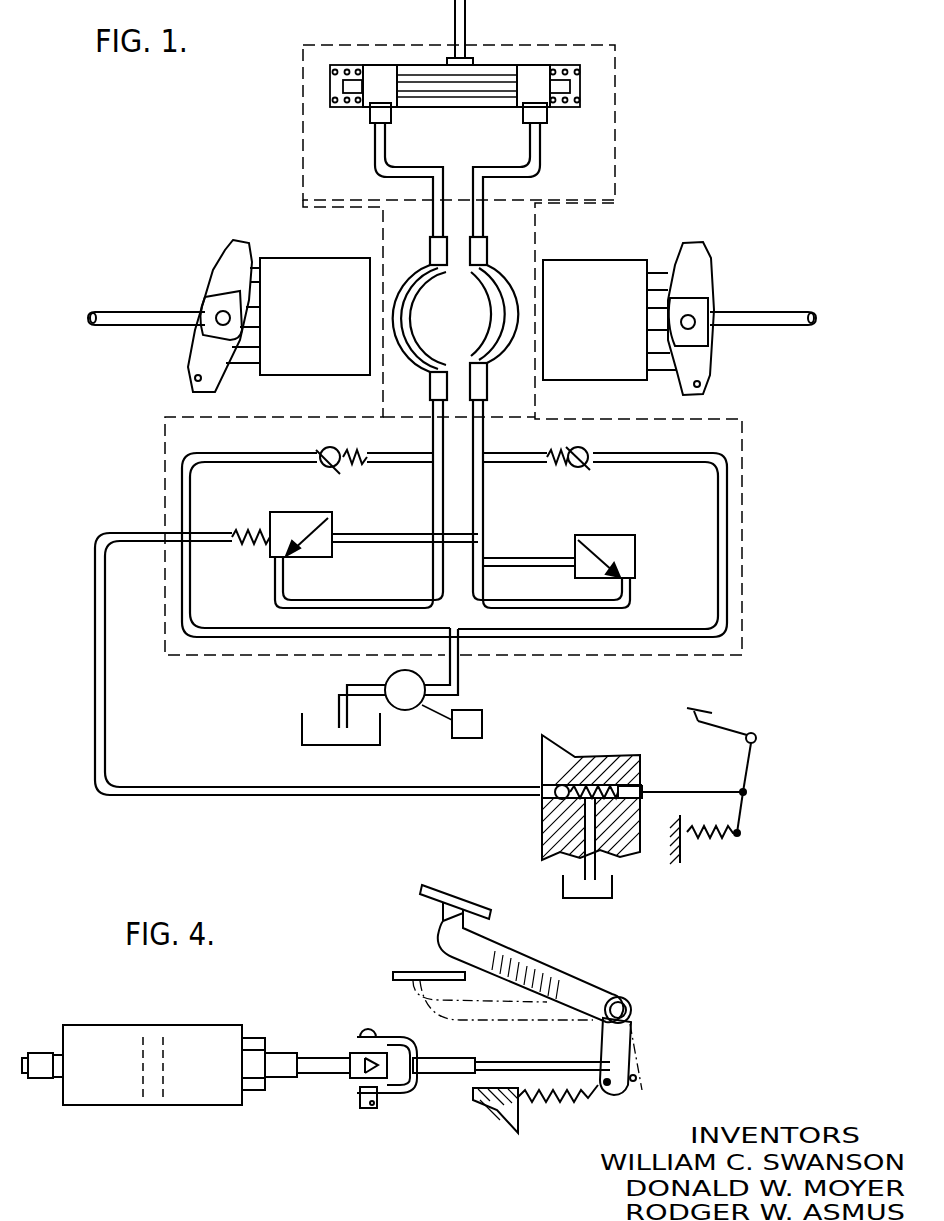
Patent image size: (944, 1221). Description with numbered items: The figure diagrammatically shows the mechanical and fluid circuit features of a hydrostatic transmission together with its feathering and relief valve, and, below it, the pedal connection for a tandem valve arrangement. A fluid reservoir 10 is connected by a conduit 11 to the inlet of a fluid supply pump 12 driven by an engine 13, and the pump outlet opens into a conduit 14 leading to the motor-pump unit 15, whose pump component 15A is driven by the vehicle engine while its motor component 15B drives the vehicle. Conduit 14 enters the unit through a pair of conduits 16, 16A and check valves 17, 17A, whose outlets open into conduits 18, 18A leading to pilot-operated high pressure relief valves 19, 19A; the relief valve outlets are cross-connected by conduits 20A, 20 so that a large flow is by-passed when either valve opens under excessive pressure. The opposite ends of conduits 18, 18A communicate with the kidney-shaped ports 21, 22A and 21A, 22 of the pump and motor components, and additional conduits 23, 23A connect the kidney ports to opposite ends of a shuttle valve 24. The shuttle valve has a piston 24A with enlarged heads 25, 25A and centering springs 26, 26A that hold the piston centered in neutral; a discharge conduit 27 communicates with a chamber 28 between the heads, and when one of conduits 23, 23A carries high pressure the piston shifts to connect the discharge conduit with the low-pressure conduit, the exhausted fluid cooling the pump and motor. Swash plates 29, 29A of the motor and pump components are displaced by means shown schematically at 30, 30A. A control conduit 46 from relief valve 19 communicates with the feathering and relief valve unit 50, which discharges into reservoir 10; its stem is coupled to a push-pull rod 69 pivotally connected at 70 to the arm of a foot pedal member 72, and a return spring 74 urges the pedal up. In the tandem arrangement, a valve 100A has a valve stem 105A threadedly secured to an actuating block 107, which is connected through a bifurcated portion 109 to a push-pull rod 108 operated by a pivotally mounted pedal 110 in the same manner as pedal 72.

In FIG. 1, the fluid reservoir 10 is at (302, 720).
In FIG. 1, the conduit 11 is at (337, 710).
In FIG. 1, the fluid supply pump 12 is at (387, 677).
In FIG. 1, the engine 13 is at (482, 723).
In FIG. 1, the conduit 14 is at (460, 670).
In FIG. 1, the motor-pump unit 15 is at (580, 256).
In FIG. 1, the pump component 15A is at (640, 260).
In FIG. 1, the motor component 15B is at (280, 258).
In FIG. 1, the conduit 16 is at (200, 637).
In FIG. 1, the conduit 16A is at (653, 640).
In FIG. 1, the check valve 17 is at (317, 463).
In FIG. 1, the check valve 17A is at (590, 467).
In FIG. 1, the conduit 18 is at (430, 498).
In FIG. 1, the conduit 18A is at (478, 495).
In FIG. 1, the pilot-operated high pressure relief valve 19 is at (332, 517).
In FIG. 1, the pilot-operated high pressure relief valve 19A is at (575, 543).
In FIG. 1, the conduit 20 is at (395, 543).
In FIG. 1, the conduit 20A is at (548, 568).
In FIG. 1, the kidney-shaped port 21 is at (423, 297).
In FIG. 1, the kidney-shaped port 21A is at (485, 352).
In FIG. 1, the kidney-shaped port 22 is at (416, 268).
In FIG. 1, the kidney-shaped port 22A is at (493, 262).
In FIG. 1, the conduit 23 is at (437, 167).
In FIG. 1, the conduit 23A is at (508, 150).
In FIG. 1, the shuttle valve 24 is at (416, 58).
In FIG. 1, the piston 24A is at (490, 83).
In FIG. 1, the enlarged head 25 is at (382, 70).
In FIG. 1, the enlarged head 25A is at (547, 75).
In FIG. 1, the centering spring 26 is at (333, 105).
In FIG. 1, the centering spring 26A is at (567, 107).
In FIG. 1, the discharge conduit 27 is at (470, 23).
In FIG. 1, the chamber 28 is at (453, 107).
In FIG. 1, the swash plate 29 is at (223, 283).
In FIG. 1, the swash plate 29A is at (710, 257).
In FIG. 1, the displacement means 30 is at (167, 415).
In FIG. 1, the displacement means 30A is at (740, 417).
In FIG. 1, the control conduit 46 is at (97, 647).
In FIG. 1, the feathering and relief valve unit 50 is at (572, 745).
In FIG. 1, the push-pull rod 69 is at (693, 785).
In FIG. 1, the pivotal connection 70 is at (752, 770).
In FIG. 1, the foot pedal member 72 is at (730, 728).
In FIG. 1, the return spring 74 is at (717, 837).
In FIG. 4, the valve 100A is at (217, 1050).
In FIG. 4, the valve rod or stem 105A is at (320, 1067).
In FIG. 4, the actuating block 107 is at (400, 1077).
In FIG. 4, the push-pull rod 108 is at (487, 1073).
In FIG. 4, the bifurcated portion 109 is at (428, 1073).
In FIG. 4, the pedal 110 is at (560, 970).